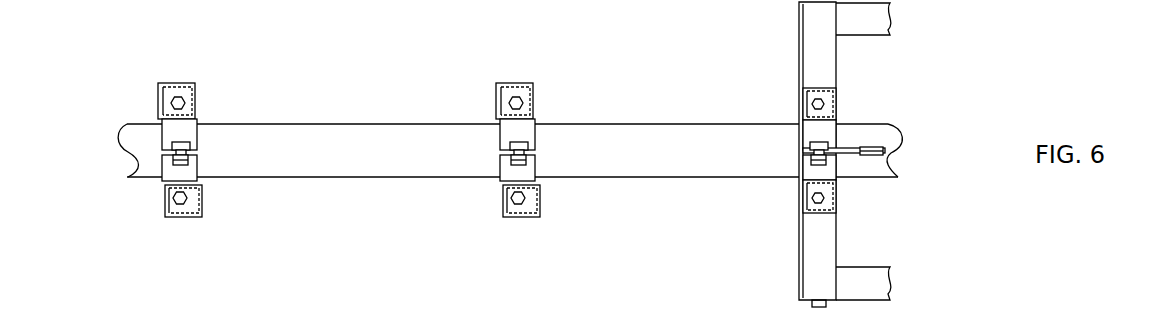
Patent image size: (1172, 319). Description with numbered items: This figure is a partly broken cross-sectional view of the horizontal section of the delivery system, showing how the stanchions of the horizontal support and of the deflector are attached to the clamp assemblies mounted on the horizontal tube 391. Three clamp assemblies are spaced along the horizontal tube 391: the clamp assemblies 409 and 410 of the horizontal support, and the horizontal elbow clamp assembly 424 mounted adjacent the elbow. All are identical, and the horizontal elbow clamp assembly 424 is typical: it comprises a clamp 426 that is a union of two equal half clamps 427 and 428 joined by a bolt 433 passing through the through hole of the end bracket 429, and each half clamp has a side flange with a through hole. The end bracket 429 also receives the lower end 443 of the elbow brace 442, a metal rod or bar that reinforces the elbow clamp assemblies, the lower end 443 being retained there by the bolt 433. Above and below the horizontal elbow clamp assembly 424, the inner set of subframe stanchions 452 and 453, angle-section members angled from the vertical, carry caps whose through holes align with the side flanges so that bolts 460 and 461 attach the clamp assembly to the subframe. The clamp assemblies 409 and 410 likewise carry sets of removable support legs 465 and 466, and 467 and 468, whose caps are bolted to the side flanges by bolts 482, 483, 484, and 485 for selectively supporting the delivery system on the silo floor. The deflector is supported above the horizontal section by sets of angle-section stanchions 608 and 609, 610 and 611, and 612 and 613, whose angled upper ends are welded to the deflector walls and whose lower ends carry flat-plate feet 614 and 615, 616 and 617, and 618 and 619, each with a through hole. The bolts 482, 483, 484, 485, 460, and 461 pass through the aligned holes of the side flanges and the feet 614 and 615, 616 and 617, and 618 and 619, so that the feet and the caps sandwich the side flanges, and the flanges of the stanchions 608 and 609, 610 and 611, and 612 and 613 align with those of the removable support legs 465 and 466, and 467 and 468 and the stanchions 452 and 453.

The horizontal tube 391 is at (388, 178).
The clamp assembly 409 is at (177, 154).
The clamp assembly 410 is at (512, 154).
The horizontal elbow clamp assembly 424 is at (832, 155).
The clamp 426 is at (835, 224).
The end bracket 429 is at (835, 77).
The half clamp 427 is at (837, 163).
The half clamp 428 is at (836, 137).
The bolt 433 is at (820, 140).
The elbow brace 442 is at (838, 152).
The lower end 443 is at (840, 144).
The stanchion 452 is at (799, 285).
The stanchion 453 is at (799, 20).
The bolt 460 is at (824, 202).
The bolt 461 is at (822, 101).
The removable support leg 465 is at (185, 218).
The removable support leg 466 is at (173, 82).
The removable support leg 467 is at (523, 218).
The removable support leg 468 is at (510, 82).
The bolt 482 is at (185, 200).
The bolt 483 is at (175, 101).
The bolt 484 is at (523, 200).
The bolt 485 is at (513, 101).
The stanchion 608 is at (165, 208).
The stanchion 609 is at (195, 98).
The stanchion 610 is at (503, 208).
The stanchion 611 is at (533, 98).
The stanchion 612 is at (803, 208).
The stanchion 613 is at (801, 93).
The foot 614 is at (202, 200).
The foot 615 is at (160, 100).
The foot 616 is at (540, 200).
The foot 617 is at (498, 100).
The foot 618 is at (836, 197).
The foot 619 is at (836, 107).